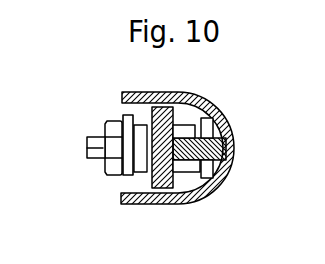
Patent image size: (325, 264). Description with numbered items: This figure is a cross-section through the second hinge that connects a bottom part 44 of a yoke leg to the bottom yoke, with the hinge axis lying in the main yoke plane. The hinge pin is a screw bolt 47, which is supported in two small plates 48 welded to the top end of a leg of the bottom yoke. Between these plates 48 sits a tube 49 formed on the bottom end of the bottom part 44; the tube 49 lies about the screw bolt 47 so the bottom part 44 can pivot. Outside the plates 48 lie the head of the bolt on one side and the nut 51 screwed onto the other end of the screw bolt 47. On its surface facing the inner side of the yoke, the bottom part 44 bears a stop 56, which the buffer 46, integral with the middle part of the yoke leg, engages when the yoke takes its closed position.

The bottom part 44 is at (162, 172).
The buffer 46 is at (223, 123).
The screw bolt 47 is at (86, 148).
The small plates 48 is at (125, 173).
The tube 49 is at (187, 133).
The nut 51 is at (110, 126).
The stop 56 is at (227, 146).